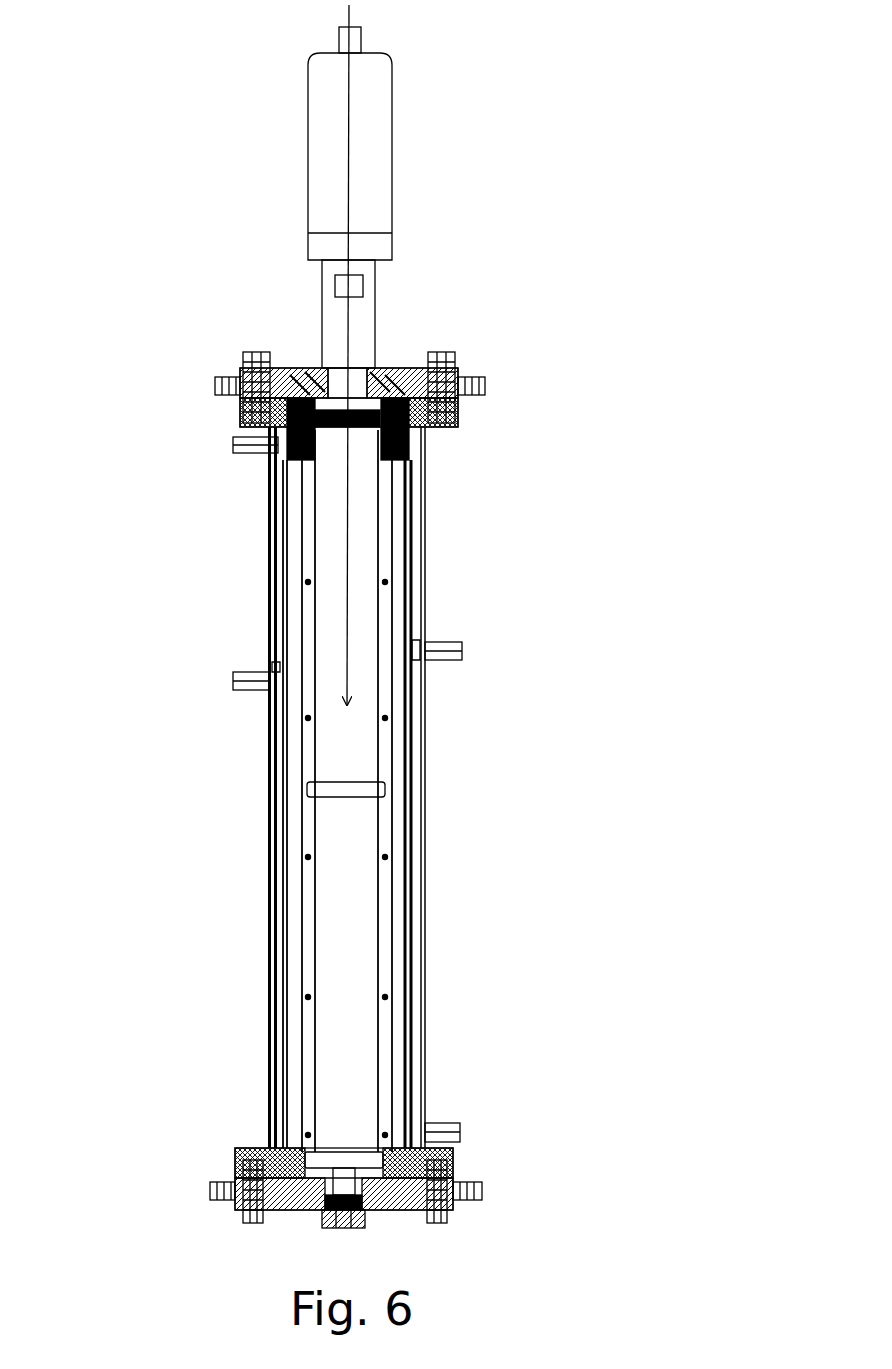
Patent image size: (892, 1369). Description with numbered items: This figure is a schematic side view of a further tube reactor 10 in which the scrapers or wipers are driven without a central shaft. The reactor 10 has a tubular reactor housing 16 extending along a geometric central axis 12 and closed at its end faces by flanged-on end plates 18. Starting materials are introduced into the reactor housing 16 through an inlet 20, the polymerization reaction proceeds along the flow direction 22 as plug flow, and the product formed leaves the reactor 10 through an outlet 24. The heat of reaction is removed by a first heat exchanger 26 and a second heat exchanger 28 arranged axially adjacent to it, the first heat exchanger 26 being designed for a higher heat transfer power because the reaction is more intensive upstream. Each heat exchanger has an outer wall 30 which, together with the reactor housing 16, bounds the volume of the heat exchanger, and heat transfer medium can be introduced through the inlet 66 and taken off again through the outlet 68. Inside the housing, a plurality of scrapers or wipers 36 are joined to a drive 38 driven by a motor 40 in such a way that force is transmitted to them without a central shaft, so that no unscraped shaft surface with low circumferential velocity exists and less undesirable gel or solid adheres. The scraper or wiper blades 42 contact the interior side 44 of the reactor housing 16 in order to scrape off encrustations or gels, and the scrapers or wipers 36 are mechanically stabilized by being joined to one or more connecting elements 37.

The reactor 10 is at (552, 212).
The geometric central axis 12 is at (355, 15).
The tubular reactor housing 16 is at (418, 560).
The end plates 18 is at (465, 420).
The inlet 20 is at (207, 387).
The flow direction 22 is at (335, 688).
The outlet 24 is at (275, 1213).
The first heat exchanger 26 is at (263, 550).
The second heat exchanger 28 is at (263, 940).
The outer wall 30 is at (425, 780).
The scraper or wiper 36 is at (380, 962).
The connecting element 37 is at (342, 782).
The drive 38 is at (375, 376).
The motor 40 is at (375, 160).
The scraper or wiper blades 42 is at (428, 495).
The interior side 44 is at (400, 862).
The inlet 66 is at (233, 445).
The outlet 68 is at (470, 650).